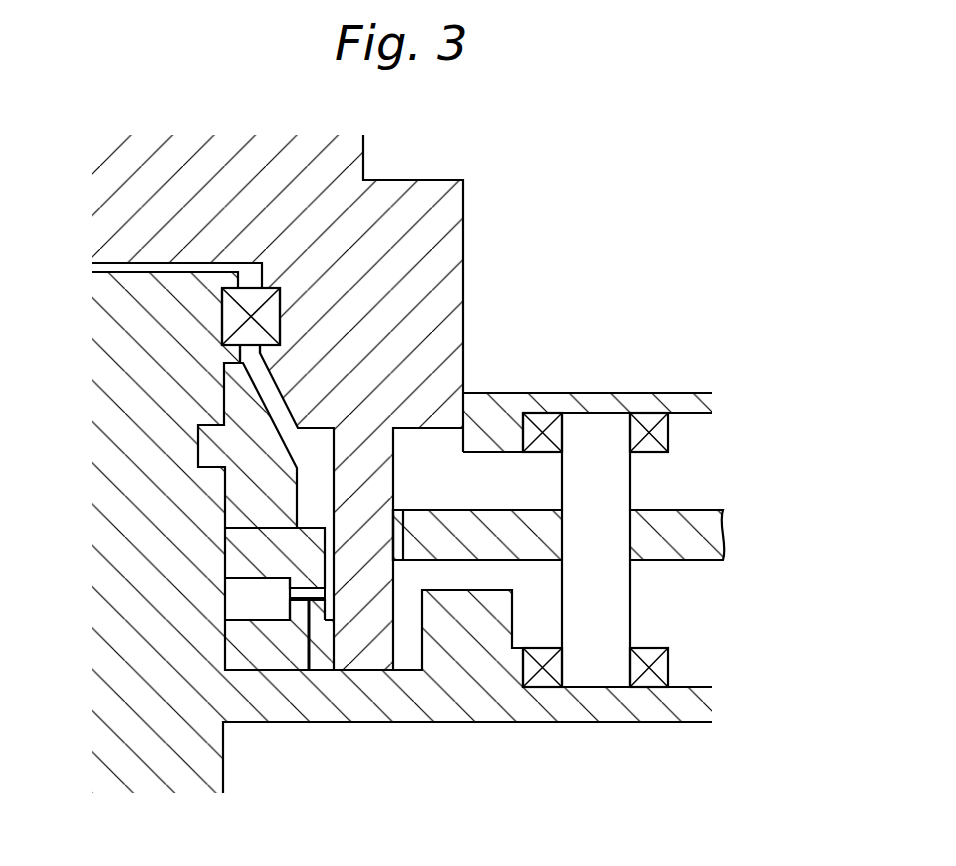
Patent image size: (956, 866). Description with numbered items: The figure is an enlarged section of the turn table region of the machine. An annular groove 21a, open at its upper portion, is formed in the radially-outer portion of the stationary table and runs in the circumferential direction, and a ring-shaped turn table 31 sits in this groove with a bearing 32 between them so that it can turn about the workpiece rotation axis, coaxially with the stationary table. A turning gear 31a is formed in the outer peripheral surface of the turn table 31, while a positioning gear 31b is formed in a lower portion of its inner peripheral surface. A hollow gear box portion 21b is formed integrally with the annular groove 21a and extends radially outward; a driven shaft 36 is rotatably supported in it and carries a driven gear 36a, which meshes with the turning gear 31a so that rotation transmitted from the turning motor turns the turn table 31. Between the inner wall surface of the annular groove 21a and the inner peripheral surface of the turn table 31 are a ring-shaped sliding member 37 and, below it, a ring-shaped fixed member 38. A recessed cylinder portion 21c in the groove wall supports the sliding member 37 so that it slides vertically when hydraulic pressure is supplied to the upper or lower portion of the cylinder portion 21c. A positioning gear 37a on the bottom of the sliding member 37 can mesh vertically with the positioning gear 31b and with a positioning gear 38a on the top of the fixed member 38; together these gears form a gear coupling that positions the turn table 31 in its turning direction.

The turn table 31 is at (486, 226).
The turning gear 31a is at (393, 510).
The positioning gear 31b is at (312, 603).
The bearing 32 is at (220, 316).
The annular groove 21a is at (234, 600).
The gear box portion 21b is at (588, 392).
The cylinder portion 21c is at (213, 490).
The driven shaft 36 is at (632, 600).
The driven gear 36a is at (723, 533).
The sliding member 37 is at (207, 445).
The positioning gear 37a is at (325, 598).
The fixed member 38 is at (248, 662).
The positioning gear 38a is at (298, 603).